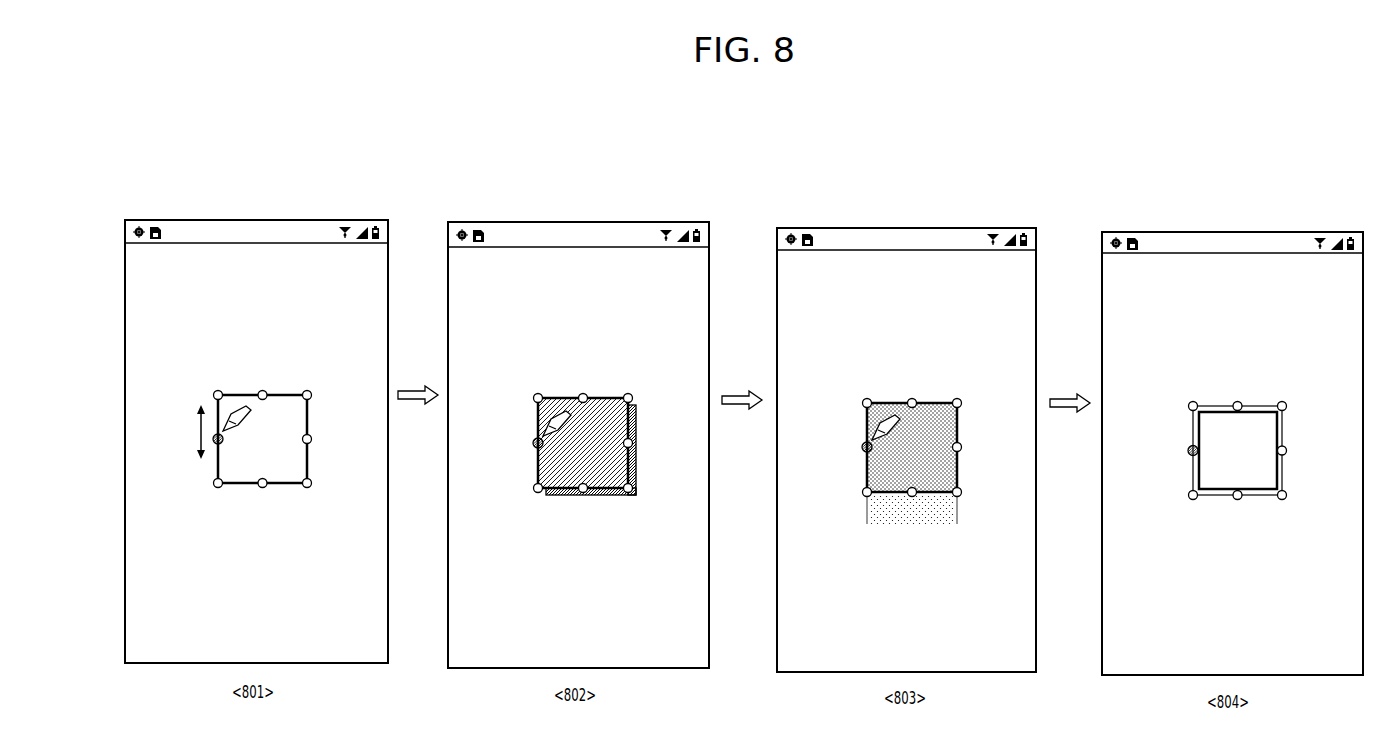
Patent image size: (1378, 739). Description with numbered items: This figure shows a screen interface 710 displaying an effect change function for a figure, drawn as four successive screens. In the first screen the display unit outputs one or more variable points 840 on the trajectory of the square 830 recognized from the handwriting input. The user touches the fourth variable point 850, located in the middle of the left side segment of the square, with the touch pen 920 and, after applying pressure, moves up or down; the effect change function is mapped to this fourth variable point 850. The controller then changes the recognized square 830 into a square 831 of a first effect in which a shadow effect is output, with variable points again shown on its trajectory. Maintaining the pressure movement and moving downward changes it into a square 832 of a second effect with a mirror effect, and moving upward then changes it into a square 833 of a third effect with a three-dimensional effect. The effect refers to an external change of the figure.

The touch screen of electronic device 710 is at (320, 222).
The square 830 is at (232, 468).
The variable points 840 is at (217, 393).
The fourth variable point 850 is at (214, 440).
The stylus pen 920 is at (250, 414).
The square of a first effect 831 is at (636, 425).
The square of a second effect 832 is at (948, 434).
The square of a third effect 833 is at (1212, 485).